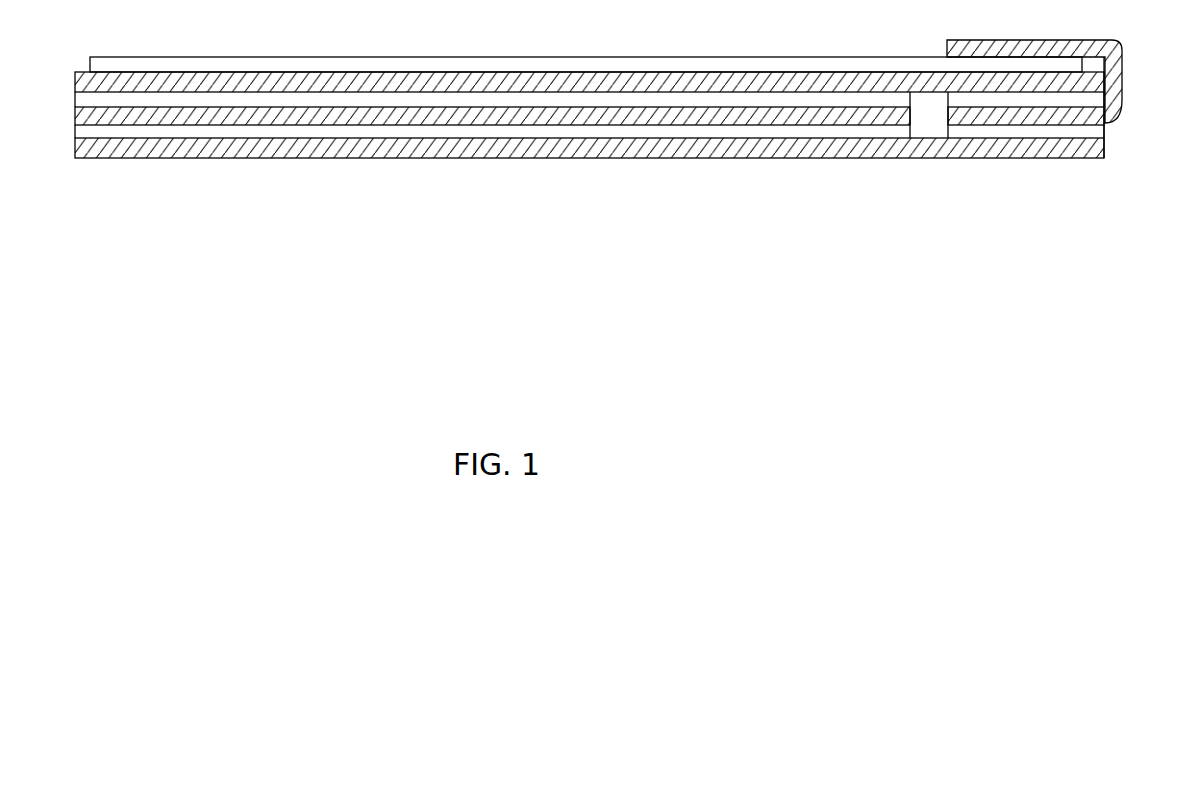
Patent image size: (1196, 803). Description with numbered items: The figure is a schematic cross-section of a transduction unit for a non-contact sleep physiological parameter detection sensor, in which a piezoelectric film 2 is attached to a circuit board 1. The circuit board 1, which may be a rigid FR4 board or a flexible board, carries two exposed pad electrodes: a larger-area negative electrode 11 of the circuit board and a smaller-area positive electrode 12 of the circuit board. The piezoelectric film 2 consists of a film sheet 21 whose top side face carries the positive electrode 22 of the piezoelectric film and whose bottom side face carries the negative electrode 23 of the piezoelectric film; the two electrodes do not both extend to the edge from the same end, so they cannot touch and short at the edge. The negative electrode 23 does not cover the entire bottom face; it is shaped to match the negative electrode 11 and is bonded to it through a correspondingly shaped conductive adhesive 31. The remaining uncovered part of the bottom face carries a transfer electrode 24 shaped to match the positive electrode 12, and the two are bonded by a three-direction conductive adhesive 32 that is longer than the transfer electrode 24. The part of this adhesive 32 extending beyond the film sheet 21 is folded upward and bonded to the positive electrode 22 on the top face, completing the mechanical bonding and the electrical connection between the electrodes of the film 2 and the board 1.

The circuit board 1 is at (593, 162).
The negative electrode of the circuit board 11 is at (117, 130).
The positive electrode of the circuit board 12 is at (1055, 133).
The piezoelectric film 2 is at (36, 32).
The film sheet 21 is at (82, 78).
The positive electrode of the piezoelectric film 22 is at (90, 61).
The negative electrode of the piezoelectric film 23 is at (82, 97).
The transfer electrode 24 is at (1078, 98).
The conductive adhesive 31 is at (82, 115).
The three-direction conductive adhesive 32 is at (1117, 45).